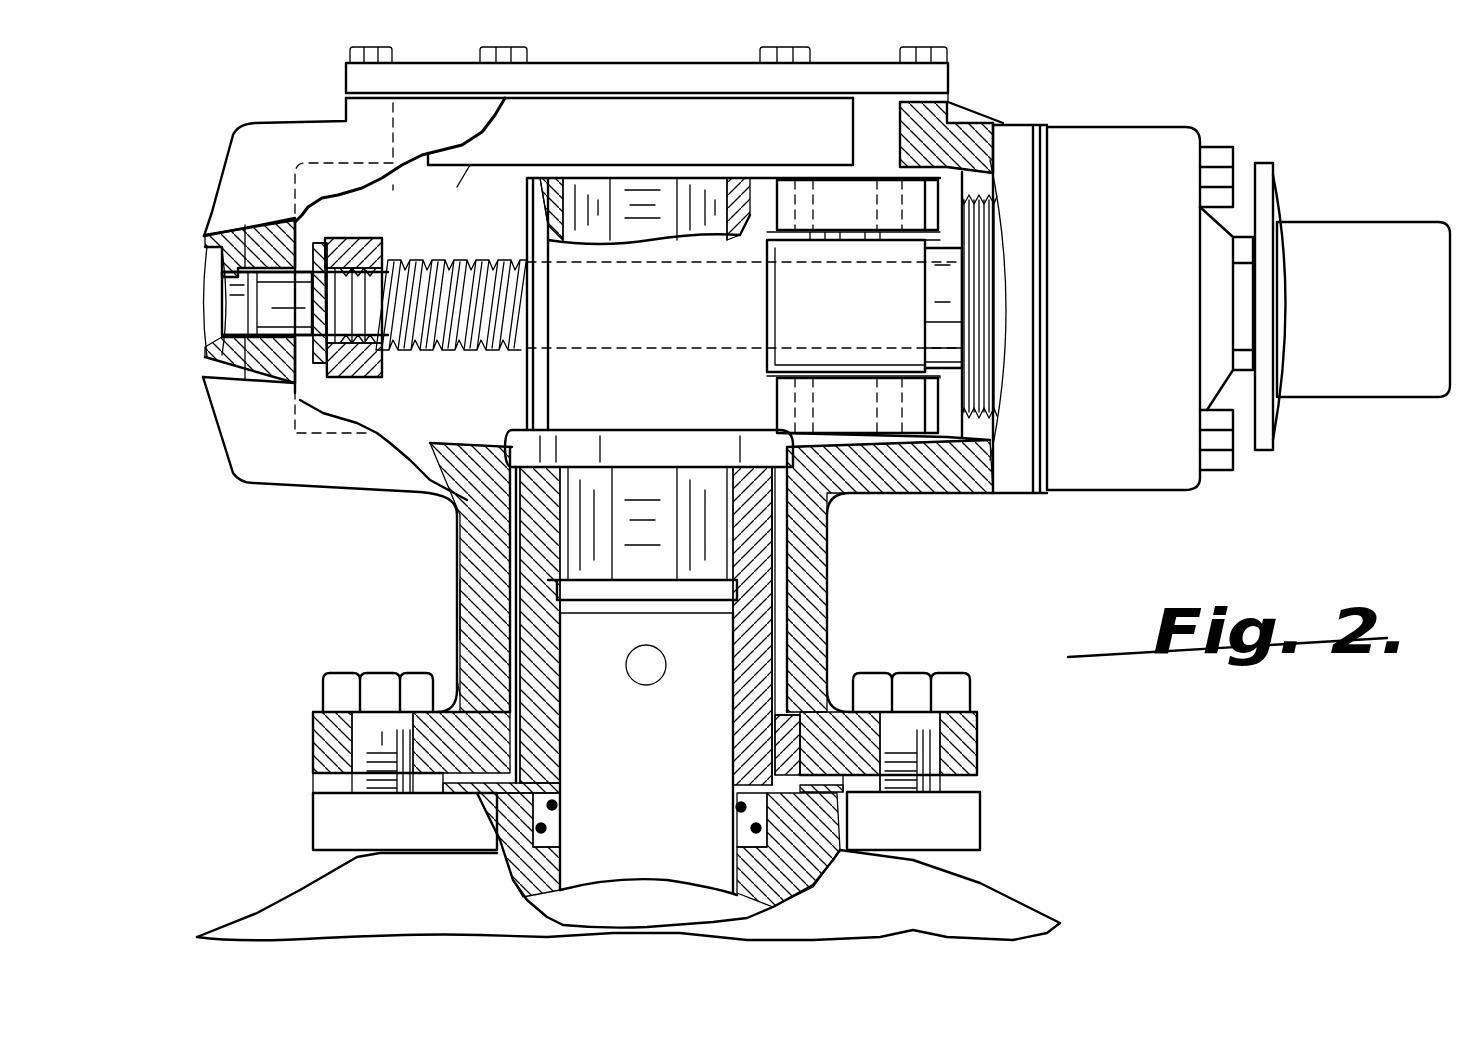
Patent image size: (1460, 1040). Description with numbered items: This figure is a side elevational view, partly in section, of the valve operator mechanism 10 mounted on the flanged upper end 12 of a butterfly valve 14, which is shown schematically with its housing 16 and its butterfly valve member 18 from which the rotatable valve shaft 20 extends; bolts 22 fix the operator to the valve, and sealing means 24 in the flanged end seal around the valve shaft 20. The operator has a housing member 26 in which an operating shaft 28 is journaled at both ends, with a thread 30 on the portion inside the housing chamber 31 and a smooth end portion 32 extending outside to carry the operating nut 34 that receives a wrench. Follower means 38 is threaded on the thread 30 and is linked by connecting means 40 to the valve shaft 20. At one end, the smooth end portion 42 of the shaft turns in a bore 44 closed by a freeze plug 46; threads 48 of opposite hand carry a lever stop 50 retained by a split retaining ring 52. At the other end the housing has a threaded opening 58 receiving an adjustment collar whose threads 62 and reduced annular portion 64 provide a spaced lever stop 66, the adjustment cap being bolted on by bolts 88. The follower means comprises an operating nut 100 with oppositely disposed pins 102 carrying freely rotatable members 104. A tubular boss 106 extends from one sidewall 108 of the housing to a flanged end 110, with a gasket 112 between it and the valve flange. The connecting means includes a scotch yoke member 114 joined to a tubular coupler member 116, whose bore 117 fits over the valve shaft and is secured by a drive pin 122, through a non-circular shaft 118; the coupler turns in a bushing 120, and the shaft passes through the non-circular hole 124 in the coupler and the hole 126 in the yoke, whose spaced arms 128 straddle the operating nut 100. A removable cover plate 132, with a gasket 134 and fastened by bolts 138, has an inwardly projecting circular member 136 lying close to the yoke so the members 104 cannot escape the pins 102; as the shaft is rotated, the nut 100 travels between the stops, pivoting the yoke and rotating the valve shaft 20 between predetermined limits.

The valve operator mechanism 10 is at (603, 440).
The flanged upper end 12 is at (982, 825).
The butterfly valve 14 is at (1020, 891).
The housing 16 is at (290, 887).
The butterfly valve member 18 is at (630, 875).
The rotatable valve shaft 20 is at (668, 780).
The bolts 22 is at (322, 692).
The sealing means 24 is at (773, 812).
The housing member 26 is at (967, 493).
The operating shaft 28 is at (468, 348).
The thread 30 is at (478, 262).
The housing chamber 31 is at (452, 237).
The end portion of operating shaft 32 is at (1248, 358).
The operating nut 34 is at (1340, 222).
The follower means 38 is at (767, 318).
The connecting means 40 is at (512, 408).
The smooth end portion 42 is at (318, 243).
The bore 44 is at (255, 218).
The freeze plug 46 is at (212, 335).
The threads 48 is at (352, 378).
The lever stop 50 is at (352, 238).
The split retaining ring 52 is at (318, 366).
The threaded opening 58 is at (1100, 124).
The threads 62 is at (985, 170).
The reduced annular portion 64 is at (943, 247).
The lever stop 66 is at (925, 256).
The bolts 88 is at (1236, 155).
The operating nut 100 is at (795, 378).
The pins 102 is at (855, 178).
The rotatable member 104 is at (785, 210).
The tubular boss 106 is at (460, 582).
The sidewall 108 is at (877, 507).
The flanged end 110 is at (980, 745).
The gasket 112 is at (432, 795).
The scotch yoke member 114 is at (553, 180).
The tubular coupler member 116 is at (774, 627).
The bore 117 is at (728, 732).
The non-circular shaft 118 is at (650, 178).
The bushing 120 is at (458, 682).
The drive pin 122 is at (685, 640).
The non-circular hole 124 is at (723, 547).
The hole 126 is at (585, 195).
The arms 128 is at (770, 182).
The cover plate 132 is at (950, 75).
The gasket 134 is at (940, 100).
The circular member 136 is at (471, 189).
The bolts 138 is at (348, 55).